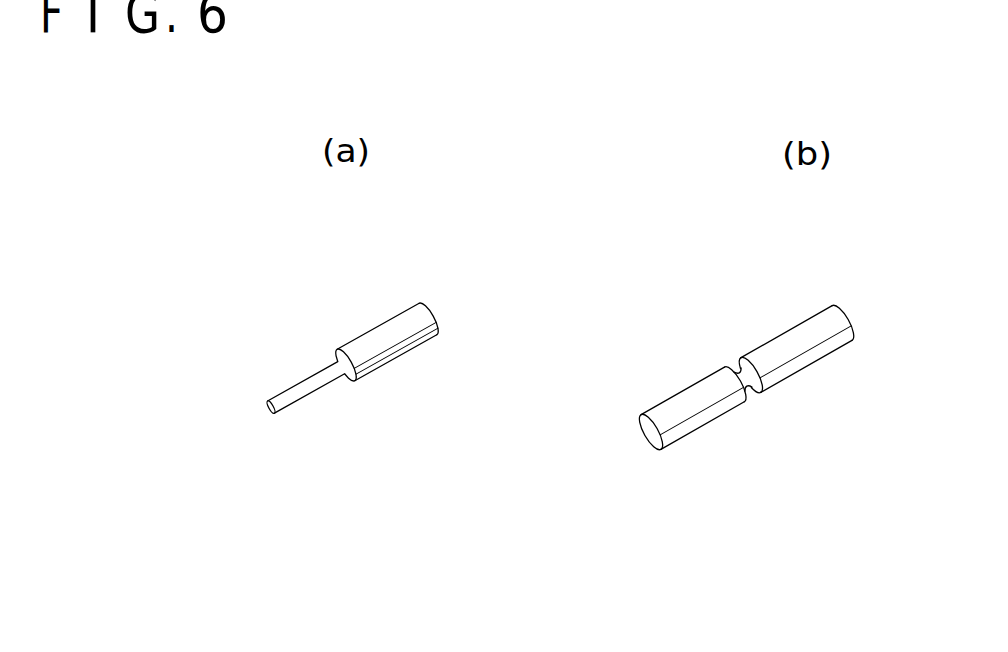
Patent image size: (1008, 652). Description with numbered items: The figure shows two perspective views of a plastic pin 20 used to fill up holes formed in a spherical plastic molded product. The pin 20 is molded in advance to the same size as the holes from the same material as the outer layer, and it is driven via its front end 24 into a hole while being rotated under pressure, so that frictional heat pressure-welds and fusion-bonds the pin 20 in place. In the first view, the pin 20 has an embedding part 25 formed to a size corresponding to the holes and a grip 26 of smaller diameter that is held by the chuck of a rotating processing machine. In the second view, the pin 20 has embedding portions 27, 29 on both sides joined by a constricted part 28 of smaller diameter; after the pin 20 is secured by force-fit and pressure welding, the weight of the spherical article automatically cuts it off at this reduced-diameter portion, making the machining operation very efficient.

In FIG. 6a, the pin 20 is at (425, 284).
In FIG. 6b, the pin 20 is at (848, 283).
In FIG. 6a, the front end 24 is at (440, 312).
In FIG. 6a, the embedding part 25 is at (385, 333).
In FIG. 6a, the grip 26 is at (302, 380).
In FIG. 6b, the embedding portions 27 is at (793, 337).
In FIG. 6b, the constricted part 28 is at (757, 393).
In FIG. 6b, the second rod portion 29 is at (682, 403).